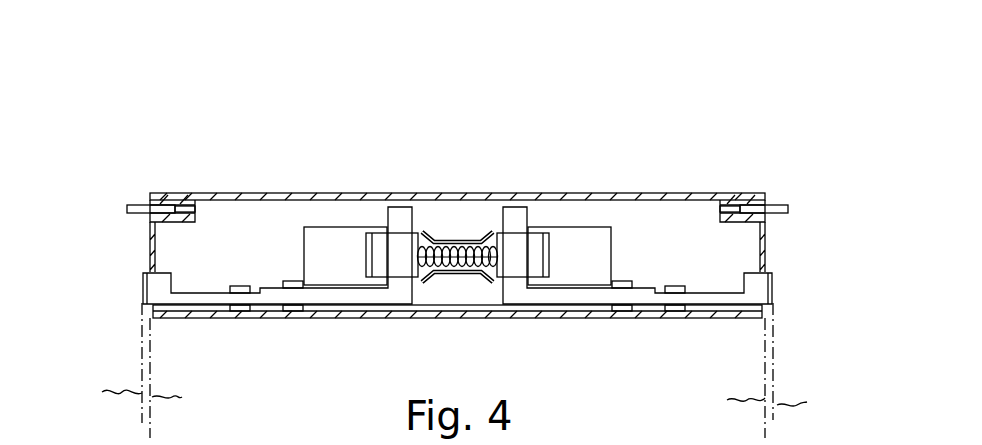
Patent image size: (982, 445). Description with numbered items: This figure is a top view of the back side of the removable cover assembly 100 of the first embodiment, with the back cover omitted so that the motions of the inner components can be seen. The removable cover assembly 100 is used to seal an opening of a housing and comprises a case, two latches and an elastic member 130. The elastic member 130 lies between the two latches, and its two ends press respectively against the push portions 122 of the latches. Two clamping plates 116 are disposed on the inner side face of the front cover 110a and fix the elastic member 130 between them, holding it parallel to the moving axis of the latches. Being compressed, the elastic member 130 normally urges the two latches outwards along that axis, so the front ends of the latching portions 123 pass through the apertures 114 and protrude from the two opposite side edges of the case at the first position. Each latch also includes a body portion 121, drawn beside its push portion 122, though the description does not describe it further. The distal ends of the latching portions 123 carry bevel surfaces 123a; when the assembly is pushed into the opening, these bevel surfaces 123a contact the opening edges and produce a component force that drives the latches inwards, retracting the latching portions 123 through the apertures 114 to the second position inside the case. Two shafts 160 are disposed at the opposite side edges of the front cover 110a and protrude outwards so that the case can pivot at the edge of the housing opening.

The removable cover assembly 100 is at (158, 97).
The front cover 110a is at (312, 193).
The aperture 114 is at (148, 308).
The clamping plate 116 is at (480, 233).
The magnet 121 is at (268, 290).
The push portion 122 is at (370, 247).
The latching portion 123 is at (157, 290).
The bevel surface 123a is at (143, 295).
The elastic member 130 is at (447, 243).
The shaft 160 is at (133, 208).